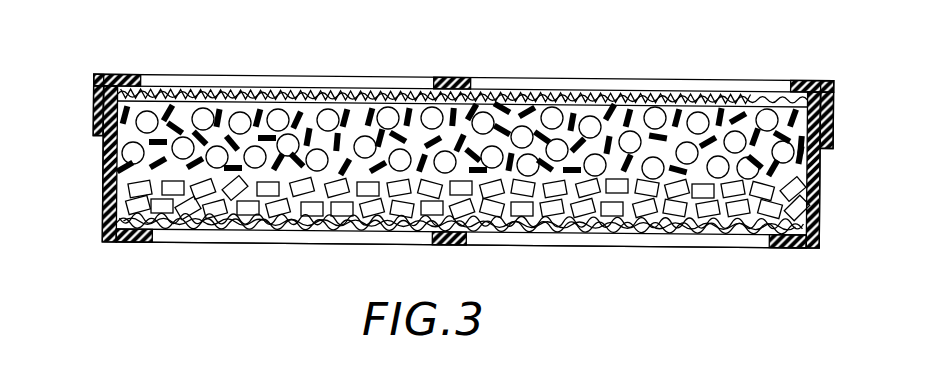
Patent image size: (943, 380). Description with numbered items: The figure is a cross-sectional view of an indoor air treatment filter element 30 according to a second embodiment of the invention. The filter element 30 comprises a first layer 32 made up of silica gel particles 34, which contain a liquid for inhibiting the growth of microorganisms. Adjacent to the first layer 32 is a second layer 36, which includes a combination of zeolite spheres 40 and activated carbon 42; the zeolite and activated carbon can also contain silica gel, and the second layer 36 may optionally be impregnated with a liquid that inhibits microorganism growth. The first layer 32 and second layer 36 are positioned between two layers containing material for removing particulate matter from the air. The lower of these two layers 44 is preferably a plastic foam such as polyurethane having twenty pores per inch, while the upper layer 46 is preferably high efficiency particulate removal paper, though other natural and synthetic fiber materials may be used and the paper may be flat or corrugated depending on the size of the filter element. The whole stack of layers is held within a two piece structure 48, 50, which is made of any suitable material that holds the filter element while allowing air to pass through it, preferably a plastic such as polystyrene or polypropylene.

The indoor air treatment filter element 30 is at (180, 270).
The first layer 32 is at (92, 175).
The silica gel particles 34 is at (795, 191).
The second layer 36 is at (84, 125).
The zeolite spheres 40 is at (283, 115).
The activated carbon 42 is at (507, 104).
The lower layer 44 is at (795, 226).
The upper layer 46 is at (663, 102).
The two piece structure 48 is at (779, 248).
The two piece structure 50 is at (795, 83).